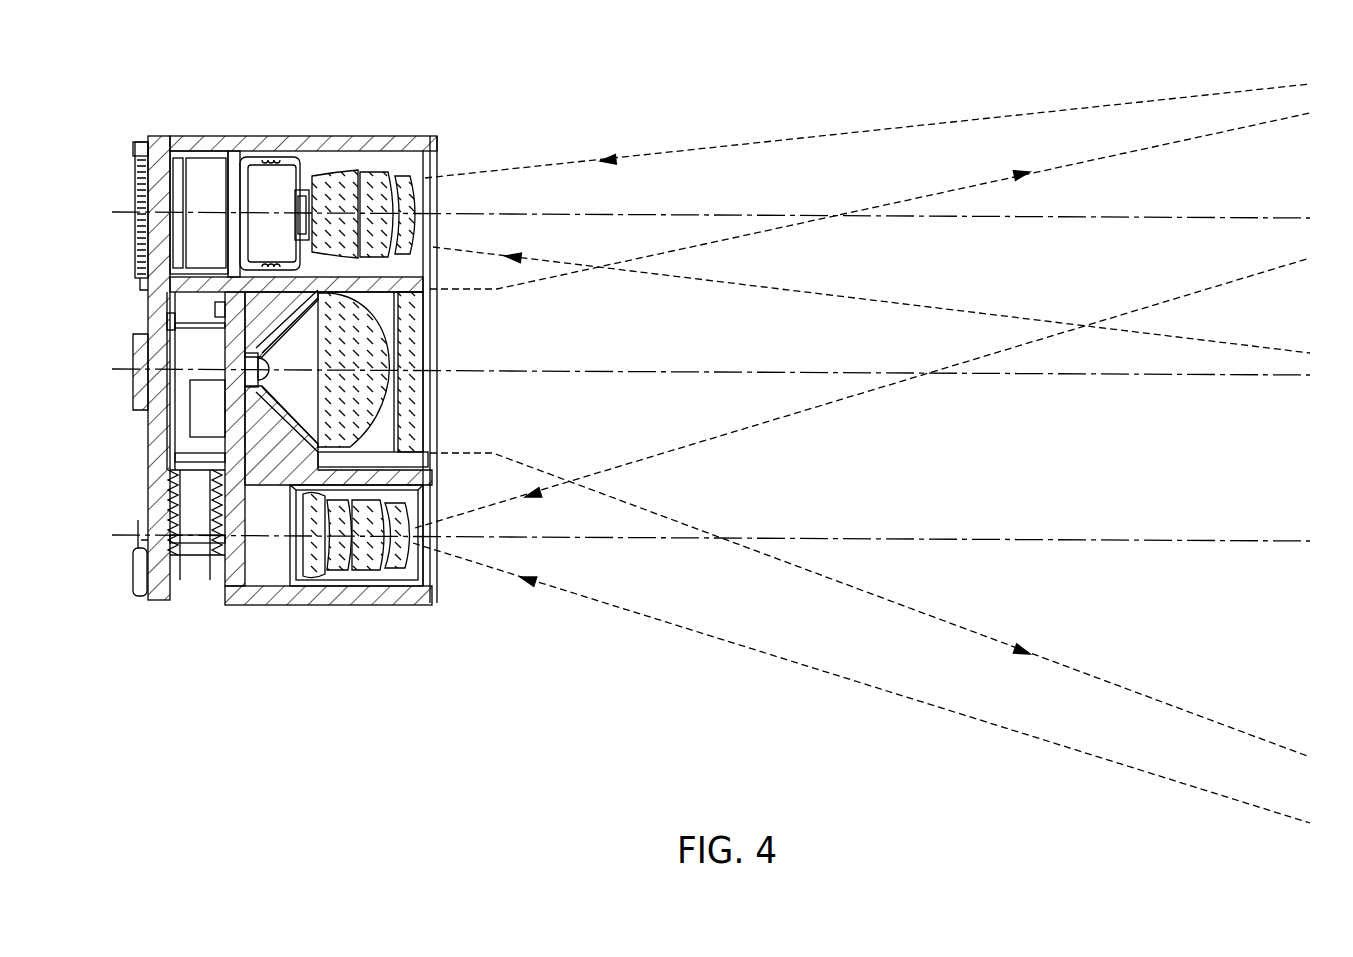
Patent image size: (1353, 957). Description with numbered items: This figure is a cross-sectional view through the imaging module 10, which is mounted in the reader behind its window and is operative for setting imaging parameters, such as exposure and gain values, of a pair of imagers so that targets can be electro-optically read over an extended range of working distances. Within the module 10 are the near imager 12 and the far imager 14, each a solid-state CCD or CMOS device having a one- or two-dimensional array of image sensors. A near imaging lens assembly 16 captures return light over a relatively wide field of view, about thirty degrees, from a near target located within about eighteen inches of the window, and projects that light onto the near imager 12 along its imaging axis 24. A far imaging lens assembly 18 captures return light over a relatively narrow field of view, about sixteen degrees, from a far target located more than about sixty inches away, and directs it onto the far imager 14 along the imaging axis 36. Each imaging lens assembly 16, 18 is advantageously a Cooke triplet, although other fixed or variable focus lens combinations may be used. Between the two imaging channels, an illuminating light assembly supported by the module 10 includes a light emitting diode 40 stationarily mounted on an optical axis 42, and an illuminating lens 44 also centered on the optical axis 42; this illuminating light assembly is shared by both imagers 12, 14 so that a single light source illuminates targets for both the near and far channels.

The imaging module 10 is at (160, 103).
The near imager 12 is at (225, 590).
The far imager 14 is at (178, 172).
The near imaging lens assembly 16 is at (308, 578).
The far imaging lens assembly 18 is at (330, 172).
The imaging axis 24 is at (772, 538).
The imaging axis 36 is at (686, 214).
The light emitting diode 40 is at (252, 366).
The optical axis 42 is at (686, 372).
The illuminating lens 44 is at (390, 378).